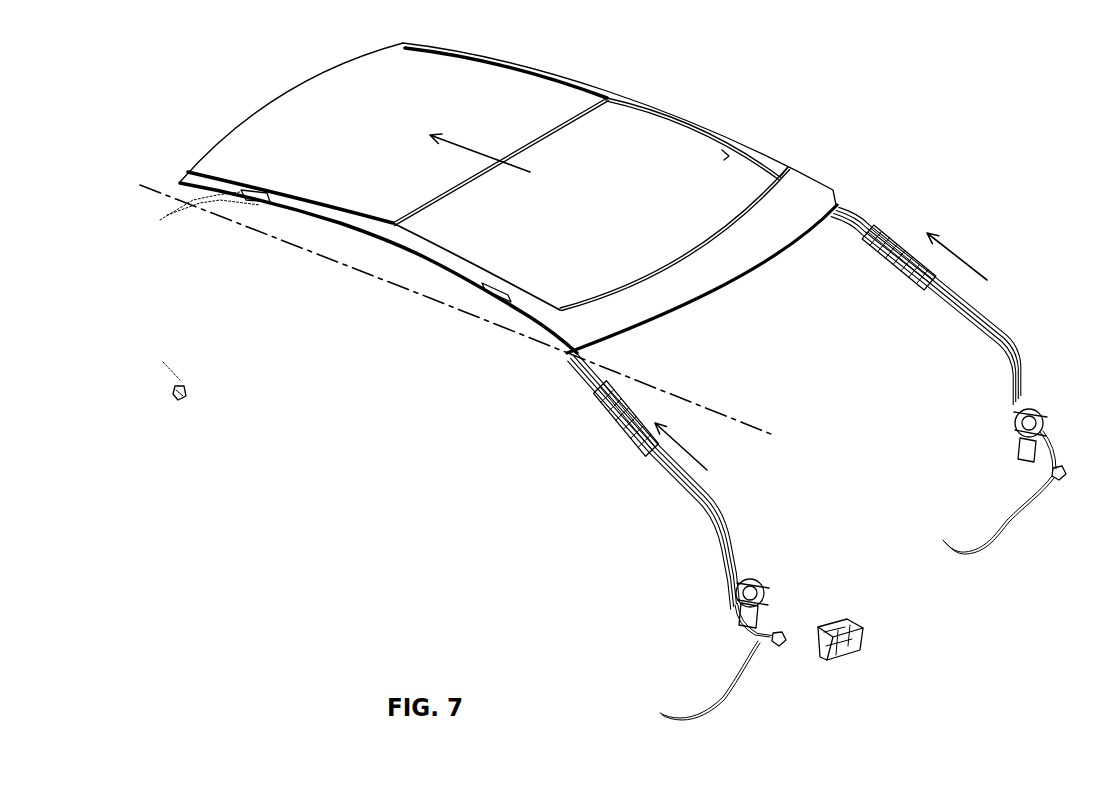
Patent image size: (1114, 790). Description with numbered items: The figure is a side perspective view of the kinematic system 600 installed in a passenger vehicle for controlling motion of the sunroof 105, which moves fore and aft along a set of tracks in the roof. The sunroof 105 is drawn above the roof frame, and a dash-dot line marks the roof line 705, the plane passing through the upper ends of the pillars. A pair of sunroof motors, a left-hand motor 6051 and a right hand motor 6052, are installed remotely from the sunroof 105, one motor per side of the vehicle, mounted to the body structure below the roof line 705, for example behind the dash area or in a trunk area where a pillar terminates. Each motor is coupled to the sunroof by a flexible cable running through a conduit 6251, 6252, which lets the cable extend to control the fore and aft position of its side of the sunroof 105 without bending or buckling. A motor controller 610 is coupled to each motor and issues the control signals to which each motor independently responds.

The kinematic system 600 is at (869, 87).
The sunroof 105 is at (617, 216).
The roof line 705 is at (467, 313).
The conduit 6251 is at (945, 299).
The right hand motor 6052 is at (736, 597).
The left-hand motor 6051 is at (1023, 423).
The conduit 6252 is at (700, 510).
The motor controller 610 is at (850, 632).